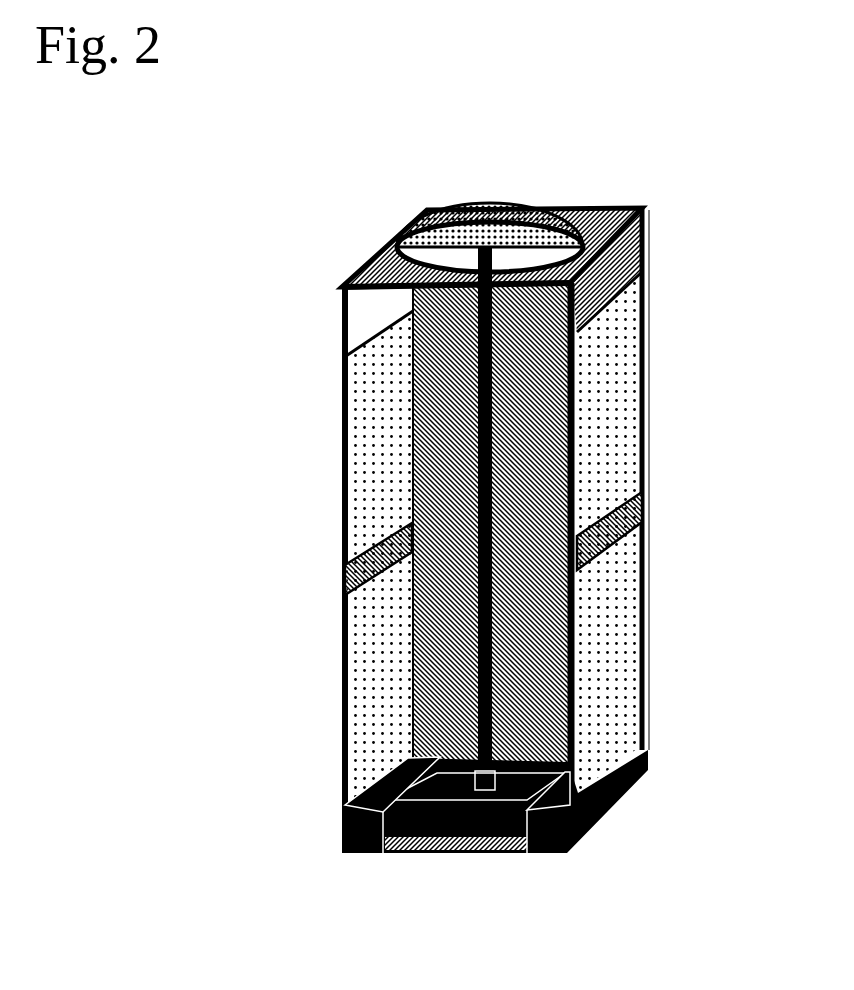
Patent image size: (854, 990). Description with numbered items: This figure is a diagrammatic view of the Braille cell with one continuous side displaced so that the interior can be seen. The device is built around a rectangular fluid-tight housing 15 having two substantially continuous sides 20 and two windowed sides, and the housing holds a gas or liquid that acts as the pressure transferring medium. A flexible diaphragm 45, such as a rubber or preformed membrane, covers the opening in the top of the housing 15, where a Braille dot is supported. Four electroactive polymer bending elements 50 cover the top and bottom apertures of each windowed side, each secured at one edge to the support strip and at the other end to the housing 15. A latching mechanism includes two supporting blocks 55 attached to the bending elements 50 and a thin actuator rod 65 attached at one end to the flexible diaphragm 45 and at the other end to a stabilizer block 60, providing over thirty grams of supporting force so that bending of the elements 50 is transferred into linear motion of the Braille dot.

The fluid-tight housing 15 is at (263, 190).
The continuous sides 20 is at (462, 530).
The flexible diaphragm 45 is at (548, 215).
The electroactive polymer bending elements 50 is at (360, 523).
The supporting blocks 55 is at (370, 848).
The stabilizer block 60 is at (488, 853).
The actuator rod 65 is at (488, 448).